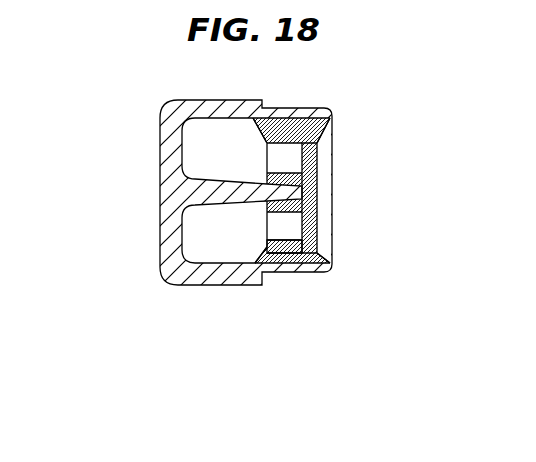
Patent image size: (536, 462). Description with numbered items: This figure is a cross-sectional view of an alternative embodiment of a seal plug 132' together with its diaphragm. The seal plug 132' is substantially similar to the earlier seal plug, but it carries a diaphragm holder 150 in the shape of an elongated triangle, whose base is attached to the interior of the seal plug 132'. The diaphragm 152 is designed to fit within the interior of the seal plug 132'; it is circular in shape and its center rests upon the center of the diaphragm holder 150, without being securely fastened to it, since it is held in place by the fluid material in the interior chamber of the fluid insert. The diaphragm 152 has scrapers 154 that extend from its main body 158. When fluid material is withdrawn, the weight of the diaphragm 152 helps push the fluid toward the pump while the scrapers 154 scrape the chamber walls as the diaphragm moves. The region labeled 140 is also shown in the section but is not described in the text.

The seal plug 132' is at (197, 172).
The upper cavity 140 is at (184, 159).
The diaphragm holder 150 is at (215, 203).
The diaphragm 152 is at (316, 180).
The scrapers 154 is at (271, 122).
The main body 158 is at (303, 258).